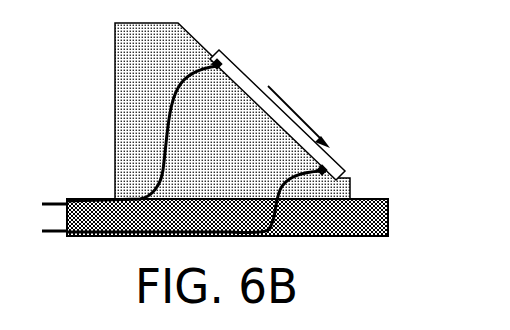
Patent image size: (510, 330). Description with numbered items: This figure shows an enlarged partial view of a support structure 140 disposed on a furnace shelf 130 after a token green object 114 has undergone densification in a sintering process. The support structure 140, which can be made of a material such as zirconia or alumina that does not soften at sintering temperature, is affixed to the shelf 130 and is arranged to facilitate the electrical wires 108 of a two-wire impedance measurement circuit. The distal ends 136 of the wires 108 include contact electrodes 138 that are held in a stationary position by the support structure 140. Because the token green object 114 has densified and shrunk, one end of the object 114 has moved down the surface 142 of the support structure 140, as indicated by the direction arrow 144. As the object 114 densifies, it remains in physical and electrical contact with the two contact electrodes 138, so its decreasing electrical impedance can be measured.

The electrical wires 108 is at (58, 203).
The token green object 114 is at (241, 66).
The shelf 130 is at (373, 198).
The distal ends 136 is at (170, 78).
The contact electrodes 138 is at (216, 64).
The support structure 140 is at (116, 109).
The surface 142 is at (262, 108).
The direction arrow 144 is at (291, 101).